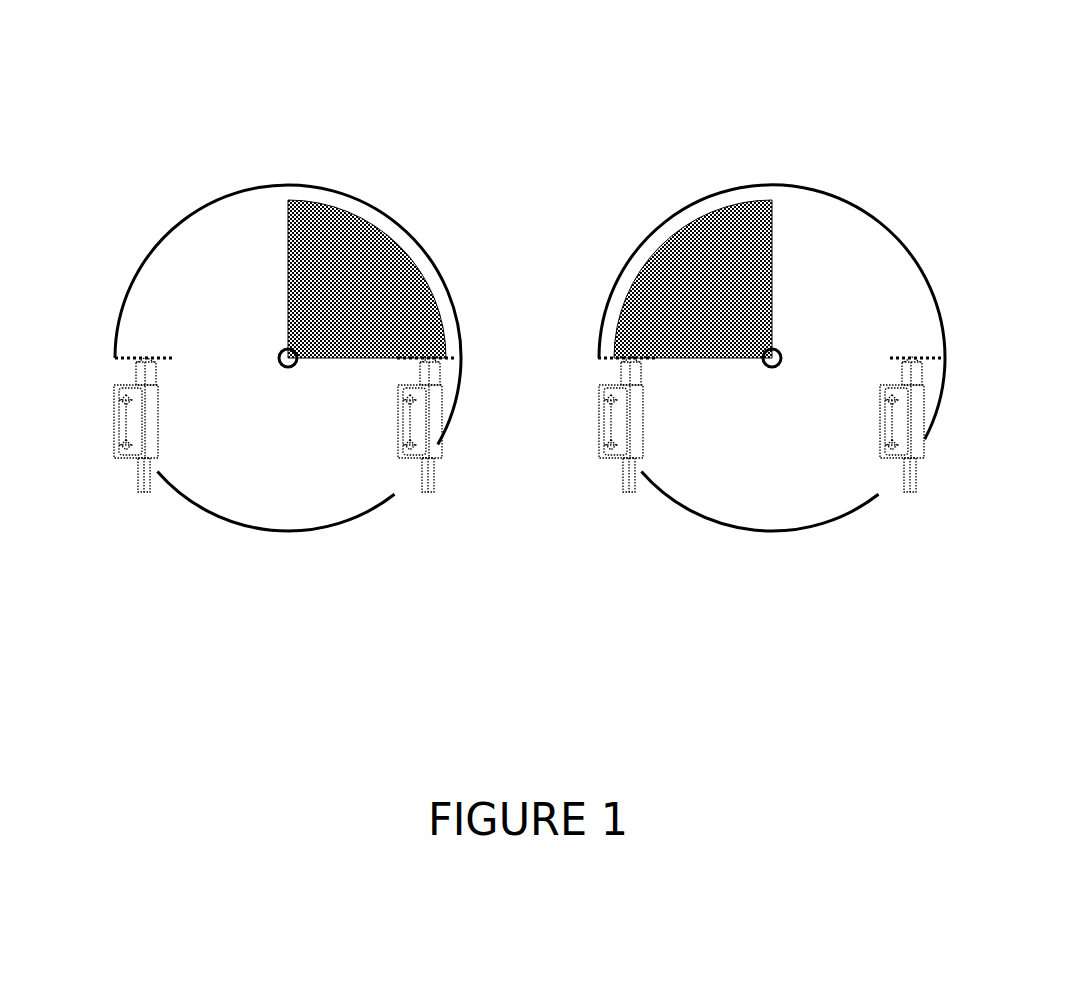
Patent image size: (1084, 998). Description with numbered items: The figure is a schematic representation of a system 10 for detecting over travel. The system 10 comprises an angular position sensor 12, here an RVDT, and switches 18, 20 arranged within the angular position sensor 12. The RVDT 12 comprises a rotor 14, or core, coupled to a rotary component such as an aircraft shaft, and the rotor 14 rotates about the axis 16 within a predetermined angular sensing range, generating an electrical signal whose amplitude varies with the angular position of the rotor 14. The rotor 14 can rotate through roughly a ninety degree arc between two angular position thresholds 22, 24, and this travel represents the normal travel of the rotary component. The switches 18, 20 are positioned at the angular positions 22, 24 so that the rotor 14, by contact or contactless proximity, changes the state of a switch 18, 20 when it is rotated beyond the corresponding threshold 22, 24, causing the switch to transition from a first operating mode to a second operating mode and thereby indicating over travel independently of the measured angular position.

The system for detecting over travel 10 is at (585, 116).
The angular position sensor 12 is at (625, 267).
The rotor 14 is at (300, 282).
The axis 16 is at (772, 366).
The switch 18 is at (412, 422).
The switch 20 is at (152, 399).
The angular position threshold 22 is at (440, 360).
The angular position threshold 24 is at (612, 360).